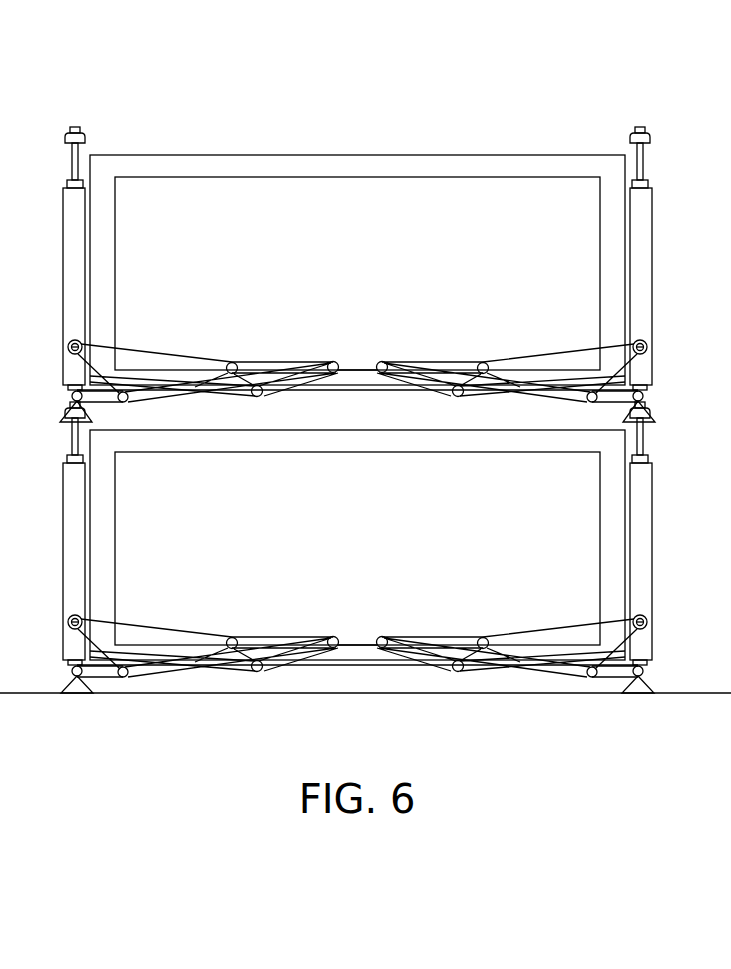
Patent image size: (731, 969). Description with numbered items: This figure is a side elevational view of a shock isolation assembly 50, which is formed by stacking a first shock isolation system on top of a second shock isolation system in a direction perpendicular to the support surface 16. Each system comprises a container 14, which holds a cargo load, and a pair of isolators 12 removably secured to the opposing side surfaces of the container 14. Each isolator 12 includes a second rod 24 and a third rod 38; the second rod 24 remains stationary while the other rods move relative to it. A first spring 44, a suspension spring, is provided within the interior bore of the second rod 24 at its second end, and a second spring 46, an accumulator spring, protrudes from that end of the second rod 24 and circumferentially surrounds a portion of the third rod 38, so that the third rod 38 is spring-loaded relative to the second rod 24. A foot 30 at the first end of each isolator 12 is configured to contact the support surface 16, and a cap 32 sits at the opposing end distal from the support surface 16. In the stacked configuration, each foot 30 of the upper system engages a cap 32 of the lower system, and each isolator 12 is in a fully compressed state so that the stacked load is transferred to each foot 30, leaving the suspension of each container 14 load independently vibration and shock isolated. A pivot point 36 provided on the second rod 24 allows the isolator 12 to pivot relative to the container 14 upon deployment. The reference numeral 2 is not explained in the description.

The lifting system 2 is at (0, 388).
The isolator 12 is at (360, 426).
The container 14 is at (362, 291).
The support surface 16 is at (393, 694).
The second rod 24 is at (70, 237).
The foot 30 is at (72, 412).
The cap 32 is at (68, 133).
The pivot point 36 is at (70, 345).
The third rod 38 is at (70, 163).
The first spring 44 is at (648, 182).
The second spring 46 is at (67, 186).
The shock isolation assembly 50 is at (665, 100).